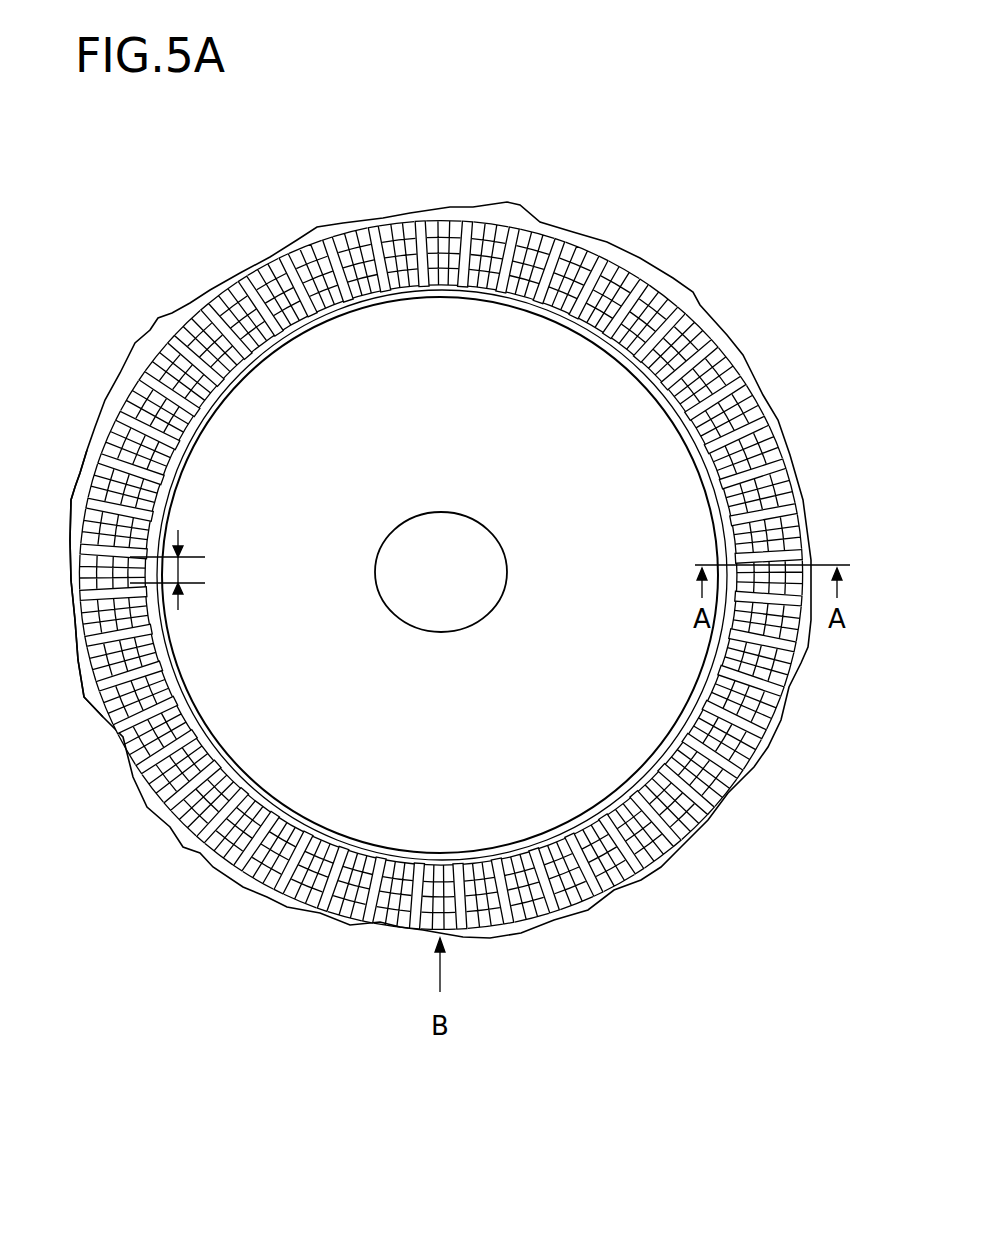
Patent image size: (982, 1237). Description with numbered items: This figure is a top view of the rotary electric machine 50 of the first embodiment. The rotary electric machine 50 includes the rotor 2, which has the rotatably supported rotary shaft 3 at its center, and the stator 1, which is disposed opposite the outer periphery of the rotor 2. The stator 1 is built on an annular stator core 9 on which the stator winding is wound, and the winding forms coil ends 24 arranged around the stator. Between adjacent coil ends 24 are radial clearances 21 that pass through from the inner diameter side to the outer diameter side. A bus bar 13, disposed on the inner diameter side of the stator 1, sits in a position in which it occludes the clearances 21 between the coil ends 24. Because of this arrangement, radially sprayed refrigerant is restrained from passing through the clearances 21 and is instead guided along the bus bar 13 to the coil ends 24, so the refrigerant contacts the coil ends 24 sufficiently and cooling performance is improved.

The stator 1 is at (612, 238).
The rotor 2 is at (257, 408).
The rotary shaft 3 is at (440, 535).
The stator core 9 is at (155, 325).
The bus bar 13 is at (411, 228).
The radial clearance 21 is at (206, 575).
The coil end 24 is at (87, 485).
The rotary electric machine 50 is at (742, 326).